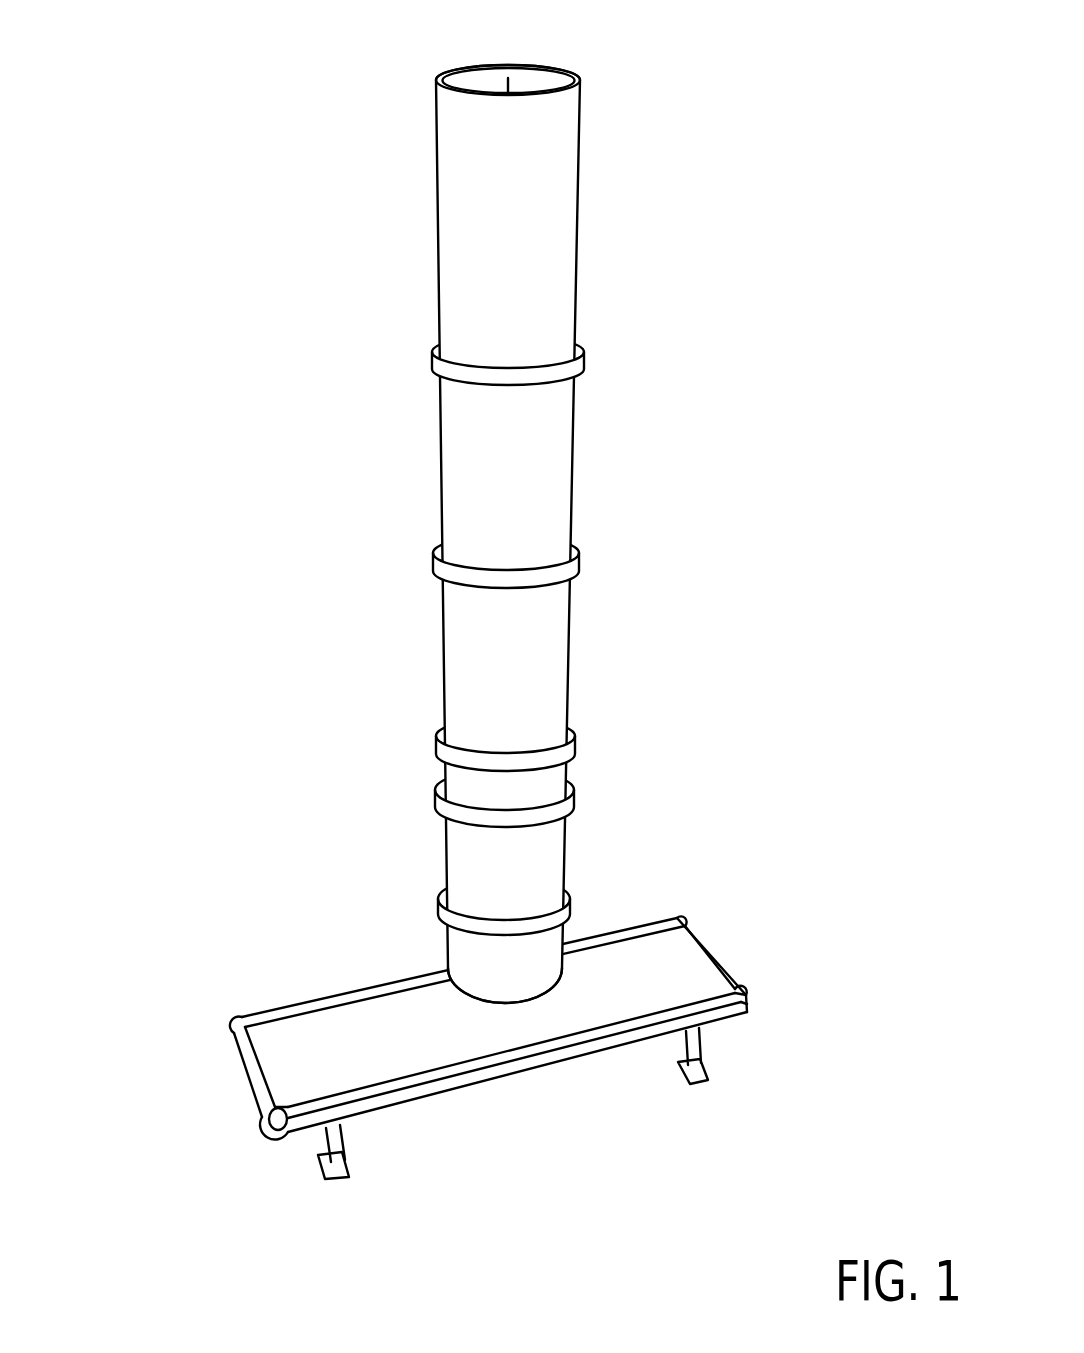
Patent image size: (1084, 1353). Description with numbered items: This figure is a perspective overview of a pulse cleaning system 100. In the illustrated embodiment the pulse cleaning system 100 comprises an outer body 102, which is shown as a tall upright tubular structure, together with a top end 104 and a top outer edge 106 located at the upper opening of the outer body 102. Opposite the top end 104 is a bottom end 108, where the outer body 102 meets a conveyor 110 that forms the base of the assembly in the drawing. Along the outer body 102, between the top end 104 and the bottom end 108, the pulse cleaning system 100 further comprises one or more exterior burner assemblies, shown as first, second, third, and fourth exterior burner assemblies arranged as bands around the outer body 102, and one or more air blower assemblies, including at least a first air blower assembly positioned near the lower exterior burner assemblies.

The pulse cleaning system 100 is at (690, 153).
The outer body 102 is at (472, 504).
The top end 104 is at (480, 82).
The top outer edge 106 is at (553, 65).
The bottom end 108 is at (450, 987).
The conveyor 110 is at (650, 930).